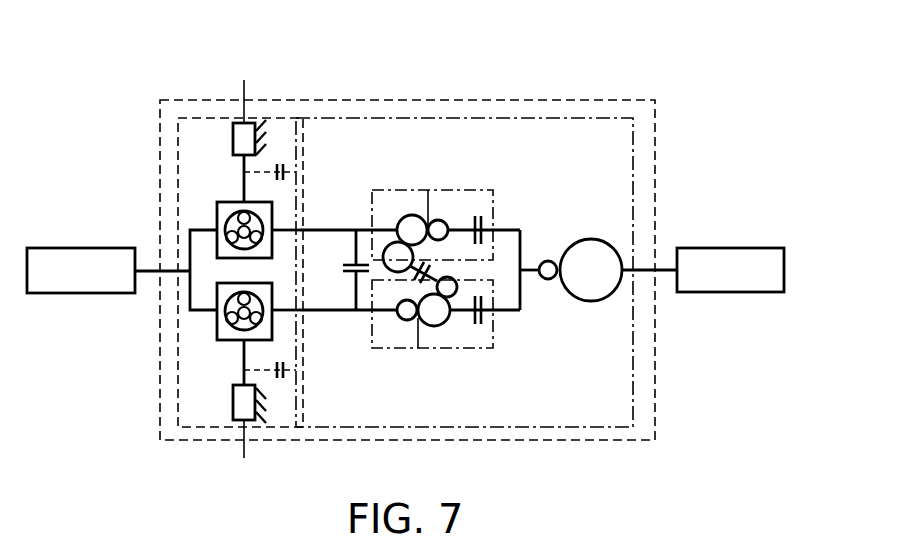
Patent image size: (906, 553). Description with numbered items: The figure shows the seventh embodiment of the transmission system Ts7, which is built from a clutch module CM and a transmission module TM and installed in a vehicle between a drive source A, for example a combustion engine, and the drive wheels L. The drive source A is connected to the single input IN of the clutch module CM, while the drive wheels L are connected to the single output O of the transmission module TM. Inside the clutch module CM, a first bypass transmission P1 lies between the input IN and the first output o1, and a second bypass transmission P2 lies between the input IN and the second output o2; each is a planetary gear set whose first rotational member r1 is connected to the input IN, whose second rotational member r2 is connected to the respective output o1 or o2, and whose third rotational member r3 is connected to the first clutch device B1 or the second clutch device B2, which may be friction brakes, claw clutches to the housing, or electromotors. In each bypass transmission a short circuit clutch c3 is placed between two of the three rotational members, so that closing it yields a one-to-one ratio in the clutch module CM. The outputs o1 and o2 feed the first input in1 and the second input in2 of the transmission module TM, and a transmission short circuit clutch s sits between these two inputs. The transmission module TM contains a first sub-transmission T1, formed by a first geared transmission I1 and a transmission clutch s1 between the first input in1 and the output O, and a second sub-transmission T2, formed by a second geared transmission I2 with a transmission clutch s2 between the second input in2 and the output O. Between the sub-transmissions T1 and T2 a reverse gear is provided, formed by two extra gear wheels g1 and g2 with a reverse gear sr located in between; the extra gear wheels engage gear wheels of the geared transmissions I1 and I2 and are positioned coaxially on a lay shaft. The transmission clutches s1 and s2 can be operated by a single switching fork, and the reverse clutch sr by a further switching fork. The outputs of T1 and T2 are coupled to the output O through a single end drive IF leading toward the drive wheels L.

The transmission system Ts7 is at (153, 100).
The clutch module CM is at (196, 118).
The transmission module TM is at (486, 118).
The drive source A is at (74, 273).
The input IN is at (177, 272).
The first rotational member r1 is at (216, 237).
The second rotational member r2 is at (273, 237).
The third rotational member r3 is at (244, 201).
The first bypass transmission P1 is at (217, 202).
The second bypass transmission P2 is at (217, 340).
The first clutch device B1 is at (249, 107).
The second clutch device B2 is at (249, 434).
The short circuit clutch c3 is at (279, 161).
The first output o1 is at (298, 229).
The second output o2 is at (298, 312).
The first input in1 is at (298, 230).
The second input in2 is at (298, 311).
The transmission short circuit clutch s is at (346, 270).
The extra gear wheel g1 is at (396, 254).
The extra gear wheel g2 is at (451, 288).
The reverse gear sr is at (417, 279).
The first geared transmission I1 is at (428, 190).
The second geared transmission I2 is at (418, 348).
The transmission clutch s1 is at (478, 216).
The transmission clutch s2 is at (478, 324).
The first sub-transmission T1 is at (486, 190).
The second sub-transmission T2 is at (493, 348).
The end drive IF is at (560, 260).
The output O is at (624, 271).
The drive wheels L is at (733, 276).